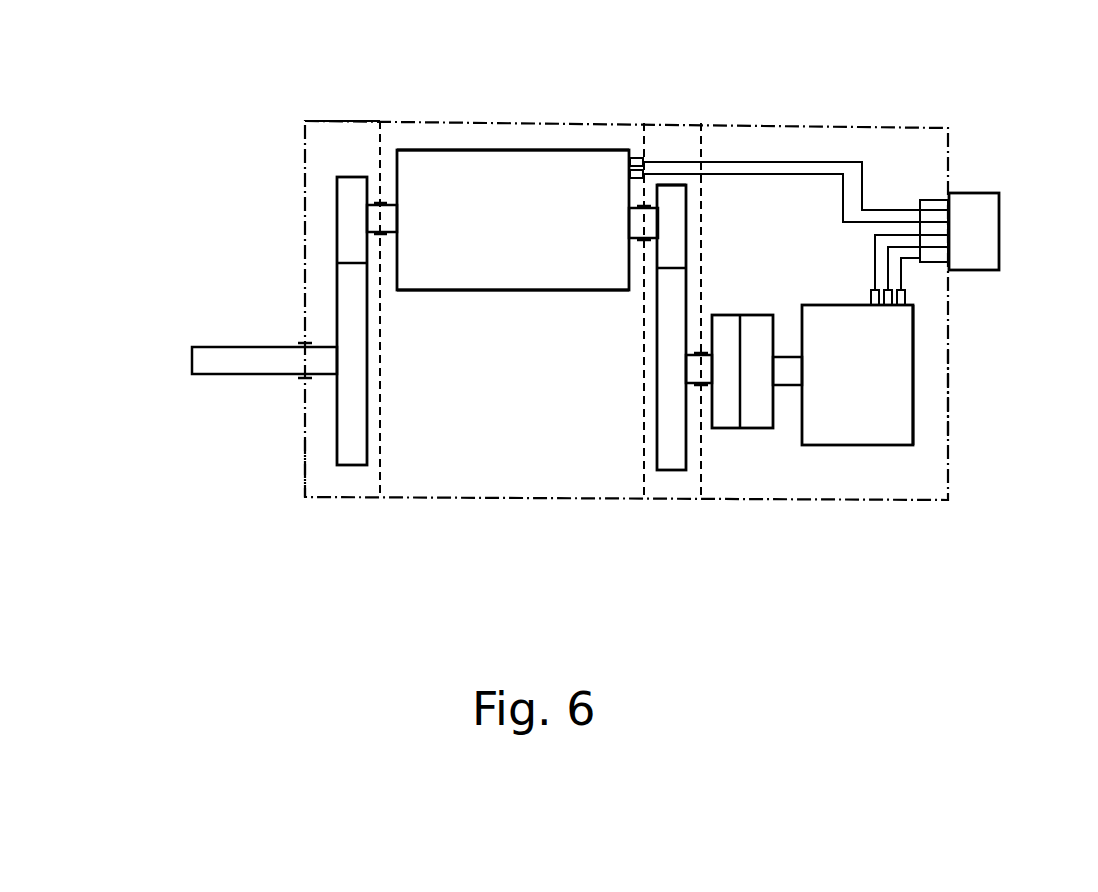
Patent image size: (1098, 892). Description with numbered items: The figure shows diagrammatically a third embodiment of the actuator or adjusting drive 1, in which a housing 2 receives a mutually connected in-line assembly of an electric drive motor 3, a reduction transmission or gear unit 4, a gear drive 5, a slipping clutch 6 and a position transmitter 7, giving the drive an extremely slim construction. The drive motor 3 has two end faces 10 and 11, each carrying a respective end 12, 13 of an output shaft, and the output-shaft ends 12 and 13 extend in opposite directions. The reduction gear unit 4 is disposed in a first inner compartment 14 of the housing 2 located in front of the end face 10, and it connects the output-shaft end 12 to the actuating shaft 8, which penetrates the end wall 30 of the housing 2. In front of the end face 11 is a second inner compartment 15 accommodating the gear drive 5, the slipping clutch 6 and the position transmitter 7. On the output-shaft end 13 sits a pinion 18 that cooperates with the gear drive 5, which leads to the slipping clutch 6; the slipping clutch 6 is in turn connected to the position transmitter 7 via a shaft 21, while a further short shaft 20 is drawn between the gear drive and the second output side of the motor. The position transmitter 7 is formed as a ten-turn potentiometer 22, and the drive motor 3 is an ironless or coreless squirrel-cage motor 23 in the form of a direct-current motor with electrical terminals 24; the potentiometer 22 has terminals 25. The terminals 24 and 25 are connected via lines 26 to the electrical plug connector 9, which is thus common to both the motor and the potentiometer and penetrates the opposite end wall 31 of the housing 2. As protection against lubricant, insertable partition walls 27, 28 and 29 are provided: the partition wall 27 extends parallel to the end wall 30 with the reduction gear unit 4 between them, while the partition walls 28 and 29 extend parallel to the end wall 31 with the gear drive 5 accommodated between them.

The actuator or adjusting drive 1 is at (954, 104).
The housing 2 is at (537, 119).
The electric drive motor 3 is at (523, 266).
The reduction transmission or gear unit 4 is at (329, 243).
The gear drive 5 is at (672, 483).
The slipping clutch 6 is at (747, 443).
The position transmitter 7 is at (905, 422).
The actuating shaft 8 is at (245, 365).
The electrical plug connector 9 is at (980, 212).
The end face 10 is at (373, 156).
The end face 11 is at (666, 151).
The output-shaft end 12 is at (373, 225).
The output-shaft end 13 is at (651, 226).
The first inner compartment 14 is at (334, 150).
The second inner compartment 15 is at (773, 158).
The pinion 18 is at (673, 218).
The intermediate shaft 20 is at (698, 372).
The shaft 21 is at (782, 372).
The ten-turn potentiometer 22 is at (885, 355).
The ironless or coreless squirrel-cage motor 23 is at (467, 262).
The electrical terminals 24 is at (636, 150).
The terminals 25 is at (918, 295).
The lines 26 is at (885, 208).
The partition wall 27 is at (380, 450).
The partition wall 28 is at (637, 462).
The partition wall 29 is at (700, 440).
The end wall 30 is at (301, 453).
The end wall 31 is at (948, 395).